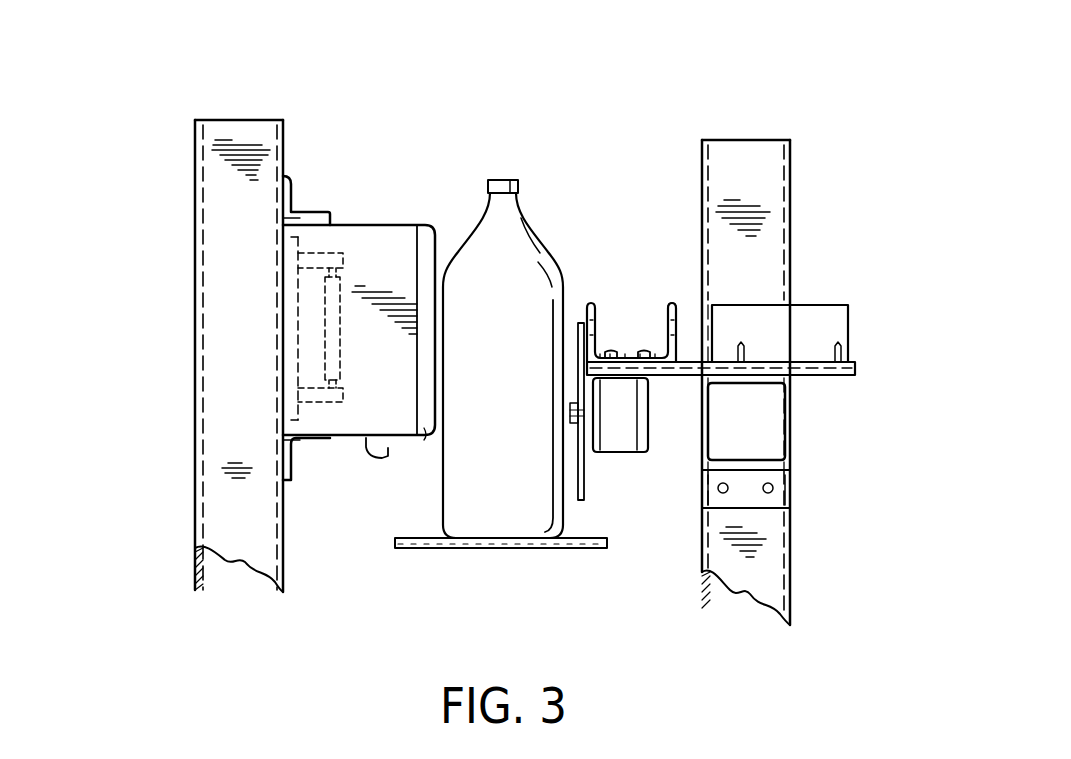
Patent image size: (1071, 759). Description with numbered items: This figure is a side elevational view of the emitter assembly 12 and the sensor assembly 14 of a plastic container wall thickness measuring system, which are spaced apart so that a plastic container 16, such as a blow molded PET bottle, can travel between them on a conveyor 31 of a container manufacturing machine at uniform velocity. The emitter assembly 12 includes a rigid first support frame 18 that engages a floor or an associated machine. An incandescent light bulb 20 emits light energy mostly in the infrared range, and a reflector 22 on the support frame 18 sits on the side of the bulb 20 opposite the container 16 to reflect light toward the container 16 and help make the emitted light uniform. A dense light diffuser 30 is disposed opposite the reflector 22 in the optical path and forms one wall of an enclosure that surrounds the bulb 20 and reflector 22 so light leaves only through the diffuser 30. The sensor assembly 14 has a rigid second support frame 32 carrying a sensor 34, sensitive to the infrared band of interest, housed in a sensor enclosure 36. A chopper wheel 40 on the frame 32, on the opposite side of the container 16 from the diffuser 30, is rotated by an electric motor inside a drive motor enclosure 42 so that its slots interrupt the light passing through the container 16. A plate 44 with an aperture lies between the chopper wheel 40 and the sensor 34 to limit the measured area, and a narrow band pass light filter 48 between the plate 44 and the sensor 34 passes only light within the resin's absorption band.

The emitter assembly 12 is at (146, 181).
The sensor assembly 14 is at (889, 157).
The plastic container 16 is at (520, 377).
The first support frame 18 is at (217, 132).
The incandescent light bulb 20 is at (328, 322).
The reflector 22 is at (296, 380).
The dense light diffuser 30 is at (422, 450).
The conveyor 31 is at (412, 549).
The second support frame 32 is at (818, 378).
The sensor 34 is at (720, 305).
The sensor enclosure 36 is at (826, 311).
The chopper wheel 40 is at (582, 501).
The drive motor enclosure 42 is at (624, 440).
The plate 44 is at (590, 303).
The narrow band pass light filter 48 is at (672, 302).